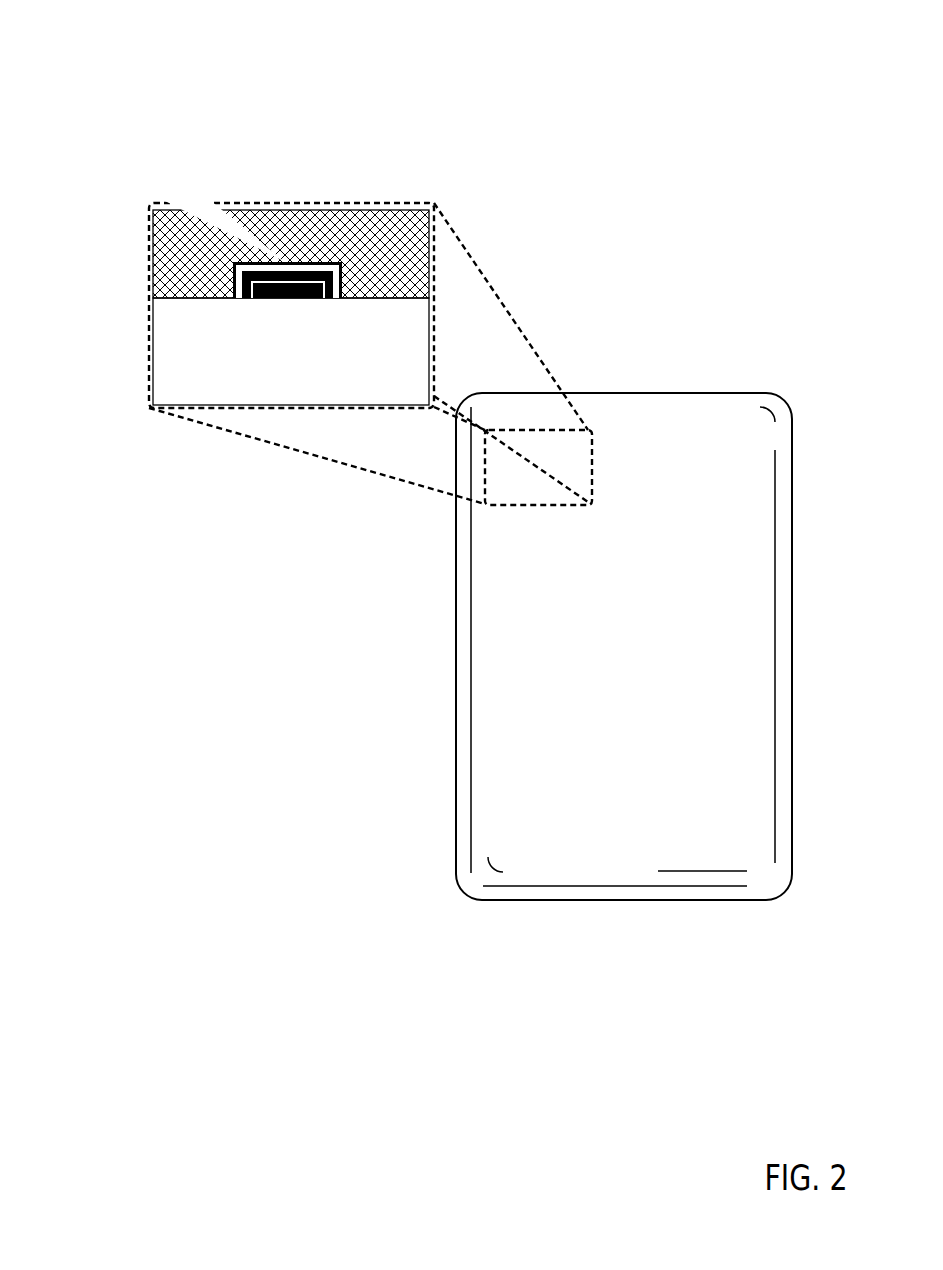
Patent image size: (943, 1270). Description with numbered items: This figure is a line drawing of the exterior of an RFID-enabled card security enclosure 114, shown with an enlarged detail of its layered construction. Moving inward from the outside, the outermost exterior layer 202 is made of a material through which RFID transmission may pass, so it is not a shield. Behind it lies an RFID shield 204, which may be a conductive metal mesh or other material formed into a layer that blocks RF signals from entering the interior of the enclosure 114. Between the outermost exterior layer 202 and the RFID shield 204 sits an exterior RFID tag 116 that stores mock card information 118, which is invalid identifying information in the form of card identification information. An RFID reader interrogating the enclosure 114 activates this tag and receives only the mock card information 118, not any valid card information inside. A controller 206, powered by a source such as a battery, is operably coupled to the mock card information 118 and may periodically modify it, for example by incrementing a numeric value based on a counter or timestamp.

The exterior RFID tag 116 is at (120, 80).
The mock card information 118 is at (209, 153).
The RFID shield 204 is at (375, 263).
The outermost exterior layer 202 is at (392, 323).
The controller 206 is at (726, 285).
The RFID-enabled card security enclosure 114 is at (603, 981).